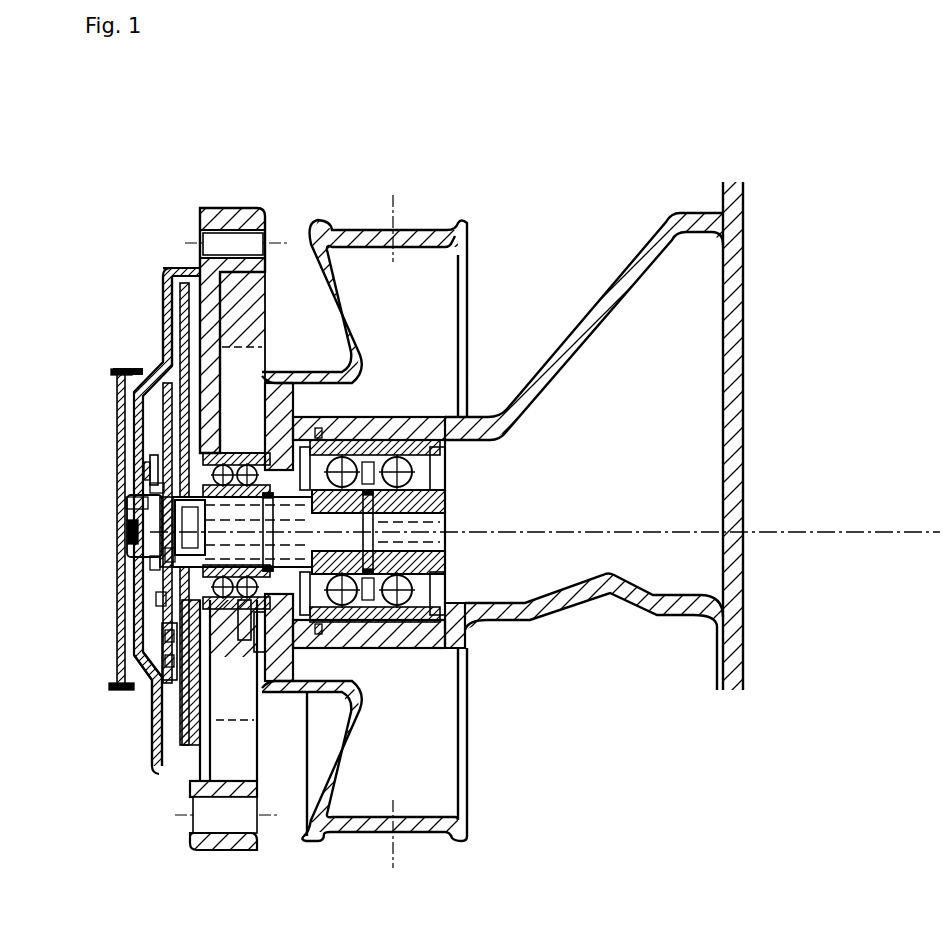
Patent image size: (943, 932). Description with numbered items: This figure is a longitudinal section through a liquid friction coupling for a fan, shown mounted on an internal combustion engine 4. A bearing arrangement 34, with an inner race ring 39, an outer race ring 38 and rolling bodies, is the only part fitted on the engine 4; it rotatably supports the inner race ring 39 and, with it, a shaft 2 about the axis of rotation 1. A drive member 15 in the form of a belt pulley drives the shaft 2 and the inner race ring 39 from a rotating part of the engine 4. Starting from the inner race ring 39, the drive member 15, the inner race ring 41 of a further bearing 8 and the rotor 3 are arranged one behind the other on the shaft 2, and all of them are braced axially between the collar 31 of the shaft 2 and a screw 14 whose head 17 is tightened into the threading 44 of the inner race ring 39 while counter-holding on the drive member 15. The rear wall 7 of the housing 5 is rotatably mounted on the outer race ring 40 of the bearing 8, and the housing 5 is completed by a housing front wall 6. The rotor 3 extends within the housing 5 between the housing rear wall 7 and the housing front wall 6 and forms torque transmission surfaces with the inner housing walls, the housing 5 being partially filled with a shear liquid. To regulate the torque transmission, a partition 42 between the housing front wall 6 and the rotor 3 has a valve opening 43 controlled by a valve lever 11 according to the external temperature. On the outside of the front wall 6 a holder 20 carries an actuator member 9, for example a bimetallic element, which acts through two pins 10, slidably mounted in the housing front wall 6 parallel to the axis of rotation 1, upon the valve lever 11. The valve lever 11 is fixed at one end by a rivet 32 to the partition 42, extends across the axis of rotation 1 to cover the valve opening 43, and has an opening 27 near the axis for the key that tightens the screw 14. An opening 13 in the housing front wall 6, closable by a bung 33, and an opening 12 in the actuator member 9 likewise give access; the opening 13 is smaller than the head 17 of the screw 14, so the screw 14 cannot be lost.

The axis of rotation 1 is at (636, 540).
The shaft 2 is at (232, 690).
The rotor 3 is at (158, 474).
The internal combustion engine 4 is at (720, 221).
The housing 5 is at (151, 270).
The housing front wall 6 is at (143, 610).
The housing rear wall 7 is at (205, 290).
The bearing 8 is at (268, 385).
The actuator member 9 is at (117, 395).
The pins 10 is at (118, 525).
The valve lever 11 is at (165, 430).
The opening 12 is at (130, 503).
The opening 13 is at (132, 510).
The screw 14 is at (160, 600).
The drive member 15 is at (344, 822).
The head of the screw 17 is at (160, 562).
The holder 20 is at (134, 372).
The opening 27 is at (148, 478).
The collar 31 is at (148, 493).
The rivet 32 is at (163, 647).
The bung 33 is at (170, 555).
The bearing arrangement 34 is at (458, 480).
The outer race ring 38 is at (440, 447).
The inner race ring 39 is at (433, 500).
The outer race ring 40 is at (247, 635).
The inner race ring 41 is at (262, 640).
The partition 42 is at (163, 336).
The valve opening 43 is at (186, 367).
The threading 44 is at (437, 538).